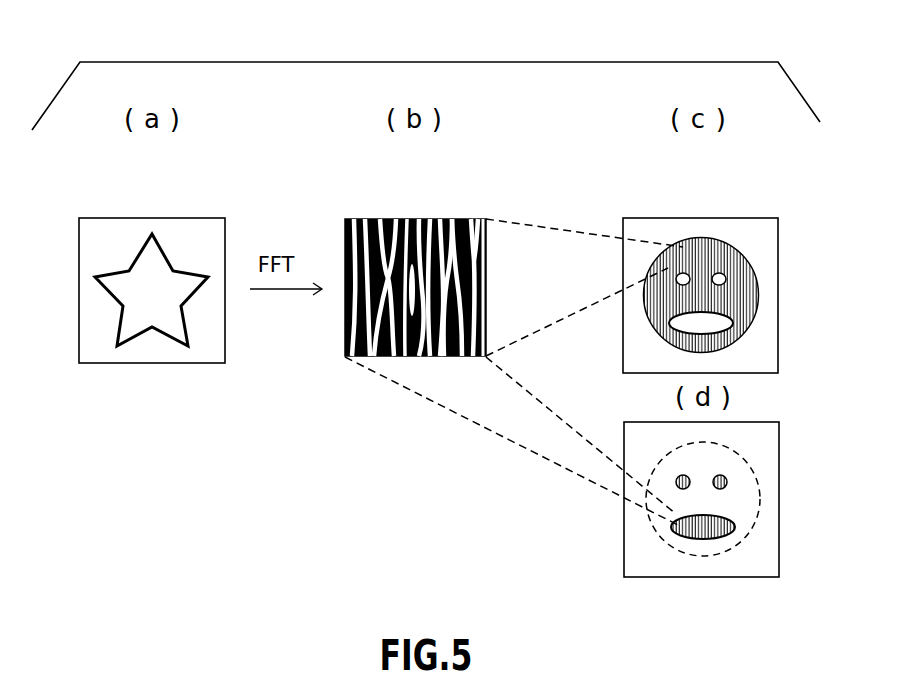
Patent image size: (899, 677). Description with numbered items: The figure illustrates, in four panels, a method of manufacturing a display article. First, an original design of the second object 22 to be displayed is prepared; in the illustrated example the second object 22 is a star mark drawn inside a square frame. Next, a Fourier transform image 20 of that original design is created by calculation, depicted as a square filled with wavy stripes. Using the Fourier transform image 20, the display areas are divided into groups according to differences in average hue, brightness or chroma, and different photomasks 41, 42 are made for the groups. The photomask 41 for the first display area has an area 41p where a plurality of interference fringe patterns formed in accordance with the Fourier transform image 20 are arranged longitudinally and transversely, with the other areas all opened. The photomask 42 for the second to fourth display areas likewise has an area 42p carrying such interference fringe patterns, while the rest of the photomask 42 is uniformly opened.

The Fourier transform image 20 is at (419, 203).
The second object to be displayed 22 is at (135, 333).
The photomask 41 is at (680, 268).
The area 41p is at (660, 309).
The photomask 42 is at (652, 528).
The area 42p is at (719, 488).